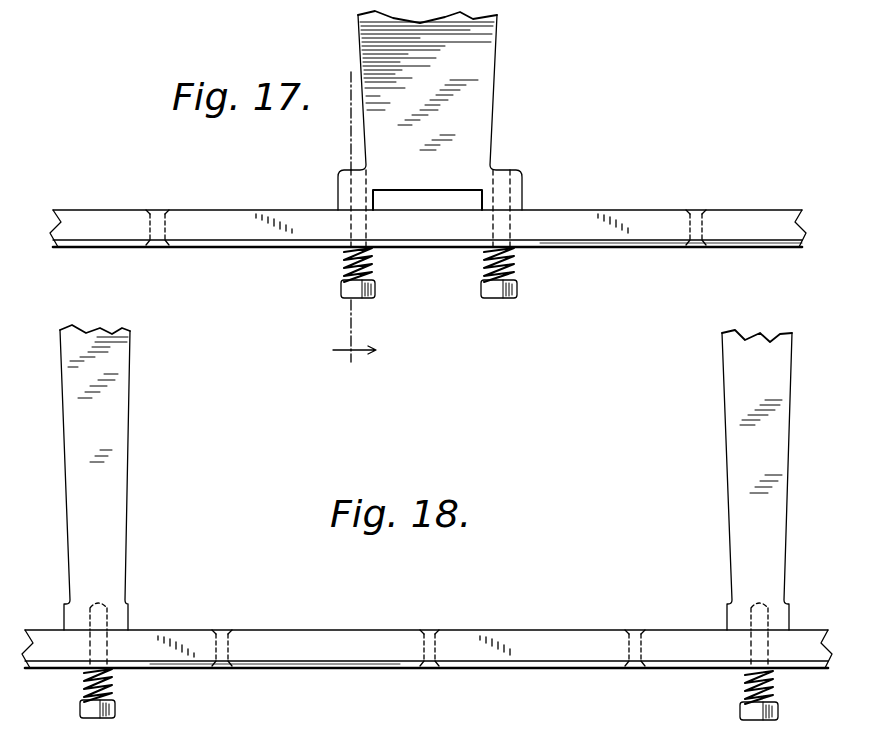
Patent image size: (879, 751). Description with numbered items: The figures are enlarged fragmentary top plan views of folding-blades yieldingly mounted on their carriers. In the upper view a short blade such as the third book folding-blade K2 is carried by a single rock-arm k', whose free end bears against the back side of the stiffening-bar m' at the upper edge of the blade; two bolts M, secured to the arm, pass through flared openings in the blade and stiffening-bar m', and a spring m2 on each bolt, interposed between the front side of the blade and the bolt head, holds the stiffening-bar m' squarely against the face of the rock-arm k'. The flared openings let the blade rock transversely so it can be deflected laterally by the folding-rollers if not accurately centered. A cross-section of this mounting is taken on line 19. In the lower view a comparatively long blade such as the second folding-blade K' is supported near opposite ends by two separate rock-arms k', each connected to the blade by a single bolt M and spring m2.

In FIG. 17, the section line 19- 19 is at (345, 60).
In FIG. 17, the rock-arm k' is at (430, 129).
In FIG. 18, the rock-arm k' is at (426, 496).
In FIG. 17, the stiffening-bar m' is at (428, 227).
In FIG. 18, the stiffening-bar m' is at (427, 649).
In FIG. 17, the spring m2 is at (343, 268).
In FIG. 18, the spring m2 is at (113, 686).
In FIG. 17, the bolt M is at (408, 310).
In FIG. 18, the bolt M is at (80, 717).
In FIG. 17, the third book folding-blade K2 is at (765, 276).
In FIG. 18, the second folding-blade K' is at (275, 682).